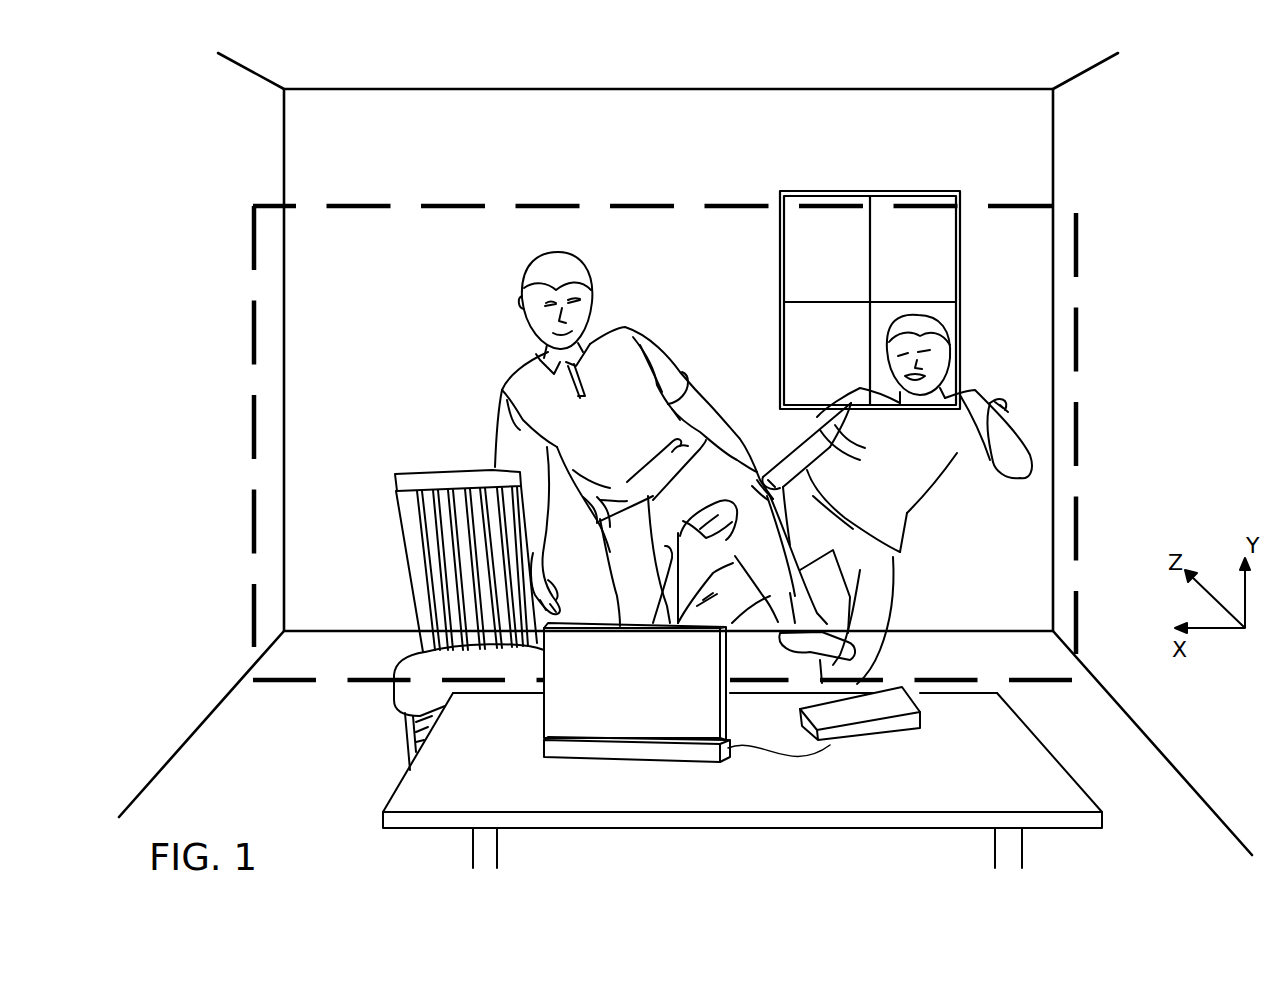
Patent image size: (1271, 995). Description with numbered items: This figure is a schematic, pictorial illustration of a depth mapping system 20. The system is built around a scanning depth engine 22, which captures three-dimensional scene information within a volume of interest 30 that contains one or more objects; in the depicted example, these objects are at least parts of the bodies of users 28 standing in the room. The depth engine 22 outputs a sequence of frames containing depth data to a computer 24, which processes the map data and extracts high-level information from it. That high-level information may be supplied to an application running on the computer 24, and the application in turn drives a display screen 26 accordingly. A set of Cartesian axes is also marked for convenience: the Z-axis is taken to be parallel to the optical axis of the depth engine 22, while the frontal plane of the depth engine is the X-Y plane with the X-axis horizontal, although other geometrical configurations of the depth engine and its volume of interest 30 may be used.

The depth mapping system 20 is at (207, 282).
The scanning depth engine 22 is at (920, 700).
The computer 24 is at (544, 747).
The display screen 26 is at (544, 702).
The users 28 is at (605, 322).
The volume of interest 30 is at (253, 424).